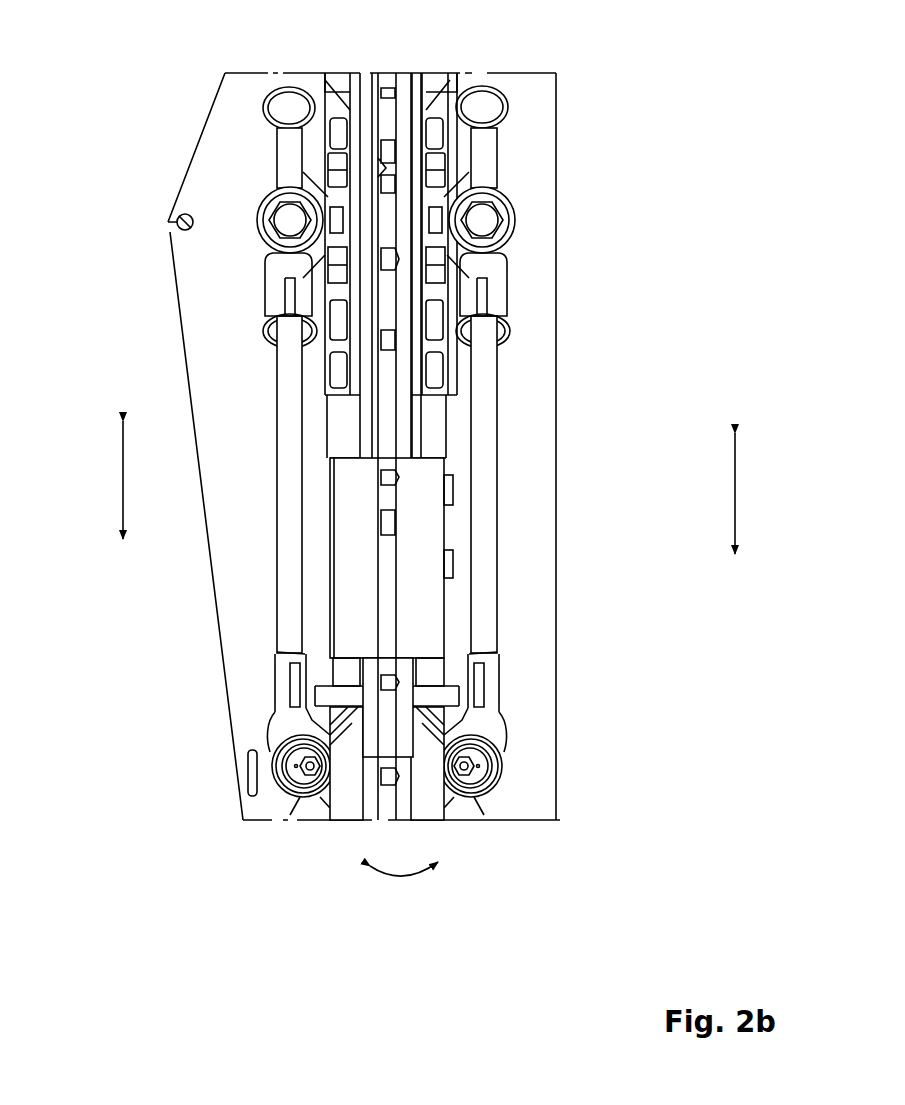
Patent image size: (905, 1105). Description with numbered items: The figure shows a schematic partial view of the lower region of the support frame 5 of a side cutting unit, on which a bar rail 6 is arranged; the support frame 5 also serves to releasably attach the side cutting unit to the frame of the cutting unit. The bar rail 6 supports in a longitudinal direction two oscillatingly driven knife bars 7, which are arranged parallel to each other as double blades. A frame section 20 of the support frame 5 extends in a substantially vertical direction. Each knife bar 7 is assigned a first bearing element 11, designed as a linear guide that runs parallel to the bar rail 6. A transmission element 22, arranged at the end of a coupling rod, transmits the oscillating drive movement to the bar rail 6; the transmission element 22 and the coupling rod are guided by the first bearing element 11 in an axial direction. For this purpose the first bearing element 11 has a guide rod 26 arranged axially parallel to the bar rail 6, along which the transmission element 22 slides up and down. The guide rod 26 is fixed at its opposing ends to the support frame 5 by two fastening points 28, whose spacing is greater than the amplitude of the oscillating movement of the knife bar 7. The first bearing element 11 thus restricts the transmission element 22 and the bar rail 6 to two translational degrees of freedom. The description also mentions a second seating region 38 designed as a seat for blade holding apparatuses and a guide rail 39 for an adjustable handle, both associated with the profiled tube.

The support frame 5 is at (226, 700).
The bar rail 6 is at (335, 405).
The knife bar 7 is at (326, 479).
The first bearing element 11 is at (252, 143).
The frame section 20 is at (512, 456).
The transmission element 22 is at (340, 197).
The guide rod 26 is at (290, 463).
The fastening point 28 is at (289, 106).
The second seating region 38 is at (402, 872).
The guide rail 39 is at (123, 478).